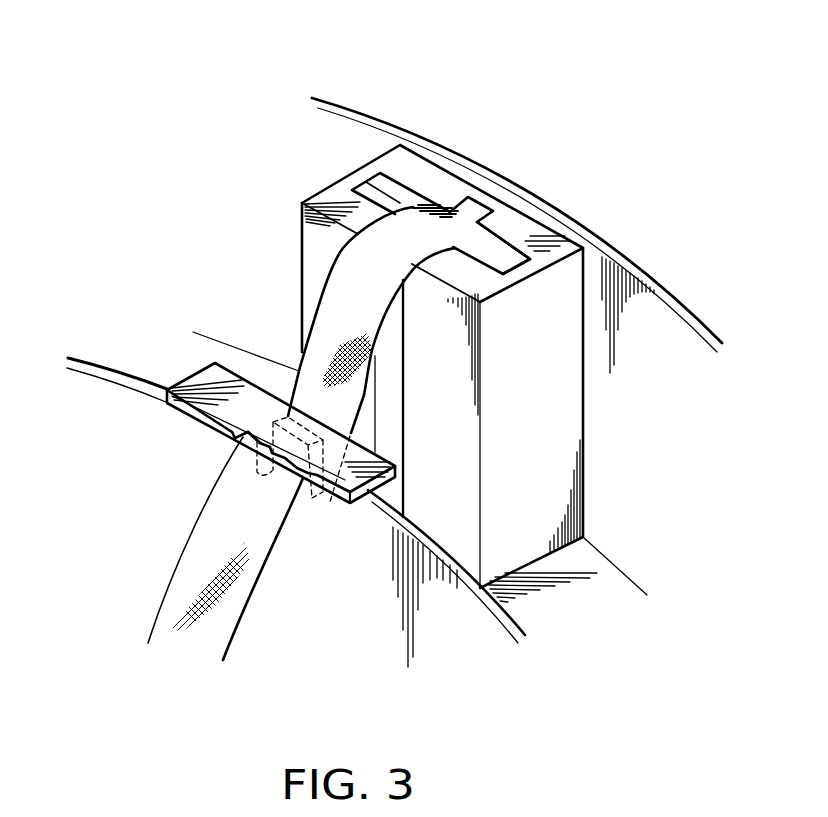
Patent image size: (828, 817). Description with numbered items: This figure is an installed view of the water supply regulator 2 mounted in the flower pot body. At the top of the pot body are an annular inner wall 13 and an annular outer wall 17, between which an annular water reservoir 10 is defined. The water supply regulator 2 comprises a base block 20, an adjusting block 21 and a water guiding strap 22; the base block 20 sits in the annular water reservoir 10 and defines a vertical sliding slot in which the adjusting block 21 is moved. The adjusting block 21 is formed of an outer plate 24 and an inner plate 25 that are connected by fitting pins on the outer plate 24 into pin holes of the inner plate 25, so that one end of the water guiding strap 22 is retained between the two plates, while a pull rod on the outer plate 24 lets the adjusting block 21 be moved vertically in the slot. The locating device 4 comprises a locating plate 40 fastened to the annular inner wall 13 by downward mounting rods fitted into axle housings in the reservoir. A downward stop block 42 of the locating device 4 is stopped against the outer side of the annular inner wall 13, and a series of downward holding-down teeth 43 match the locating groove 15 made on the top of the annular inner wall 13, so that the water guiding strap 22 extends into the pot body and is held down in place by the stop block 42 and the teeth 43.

The water supply regulator 2 is at (409, 80).
The locating device 4 is at (128, 546).
The annular water reservoir 10 is at (640, 292).
The annular inner wall 13 is at (93, 360).
The locating groove 15 is at (246, 433).
The annular outer wall 17 is at (623, 260).
The base block 20 is at (566, 399).
The adjusting block 21 is at (481, 192).
The water guiding strap 22 is at (330, 307).
The outer plate 24 is at (402, 197).
The inner plate 25 is at (497, 267).
The locating plate 40 is at (258, 446).
The downward stop block 42 is at (313, 480).
The holding-down teeth 43 is at (275, 479).